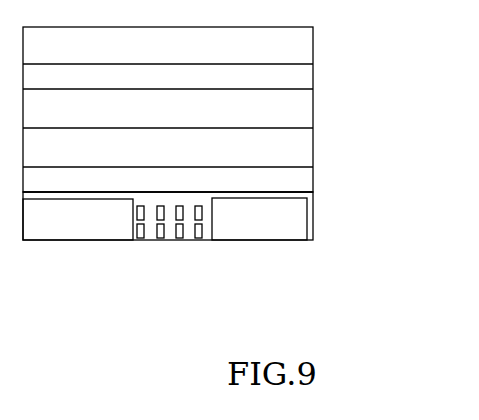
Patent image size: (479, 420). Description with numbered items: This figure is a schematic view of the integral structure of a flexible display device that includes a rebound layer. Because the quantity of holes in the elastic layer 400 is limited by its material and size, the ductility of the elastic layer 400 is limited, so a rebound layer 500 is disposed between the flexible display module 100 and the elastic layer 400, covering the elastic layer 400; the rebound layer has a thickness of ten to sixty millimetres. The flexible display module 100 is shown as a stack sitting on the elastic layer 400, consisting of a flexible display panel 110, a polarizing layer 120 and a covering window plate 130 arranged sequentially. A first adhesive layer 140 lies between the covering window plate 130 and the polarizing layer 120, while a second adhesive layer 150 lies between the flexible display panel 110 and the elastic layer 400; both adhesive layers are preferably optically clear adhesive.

The flexible display module 100 is at (240, 109).
The flexible display panel 110 is at (313, 143).
The polarizing layer 120 is at (313, 103).
The covering window plate 130 is at (313, 37).
The first adhesive layer 140 is at (313, 75).
The second adhesive layer 150 is at (204, 180).
The elastic layer 400 is at (263, 212).
The rebound layer 500 is at (306, 240).